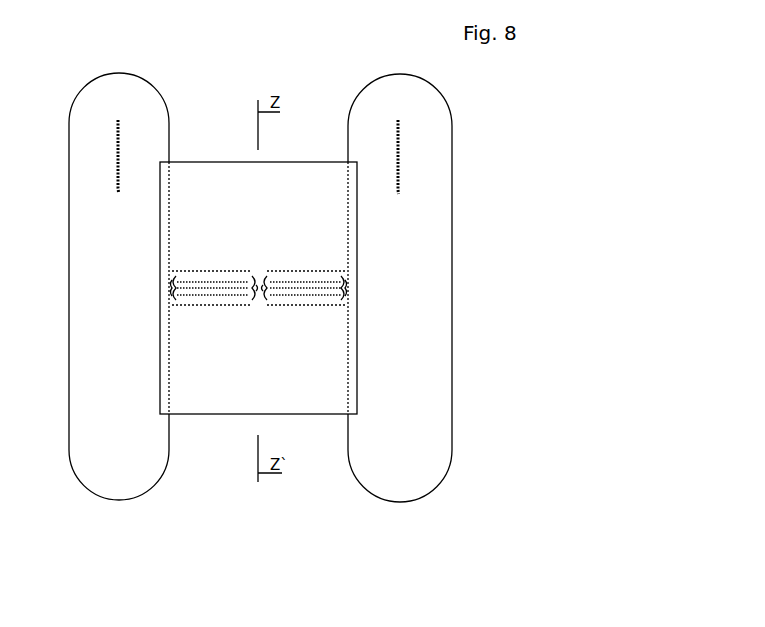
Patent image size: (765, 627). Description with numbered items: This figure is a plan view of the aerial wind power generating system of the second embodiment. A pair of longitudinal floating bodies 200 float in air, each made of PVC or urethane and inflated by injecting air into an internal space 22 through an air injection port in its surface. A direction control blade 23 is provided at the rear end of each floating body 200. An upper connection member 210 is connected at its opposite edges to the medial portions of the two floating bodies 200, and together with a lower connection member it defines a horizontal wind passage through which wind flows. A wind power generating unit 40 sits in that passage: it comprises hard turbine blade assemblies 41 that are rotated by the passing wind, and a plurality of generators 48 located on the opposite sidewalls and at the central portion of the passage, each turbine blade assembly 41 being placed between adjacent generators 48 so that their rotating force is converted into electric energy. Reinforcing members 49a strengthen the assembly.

The internal space 22 is at (291, 300).
The direction control blade 23 is at (120, 135).
The floating body 200 is at (155, 422).
The upper connection member 210 is at (290, 410).
The wind power generating unit 40 is at (258, 286).
The hard turbine blade assembly 41 is at (212, 270).
The generator 48 is at (172, 278).
The reinforcing member 49a is at (345, 280).